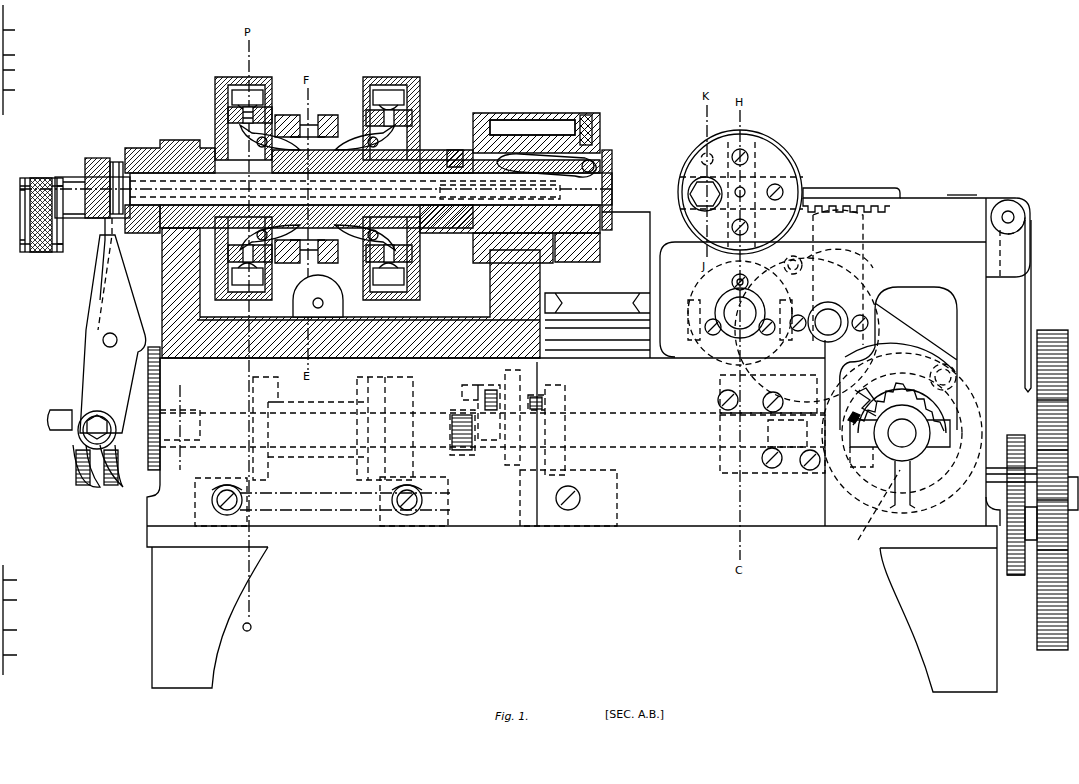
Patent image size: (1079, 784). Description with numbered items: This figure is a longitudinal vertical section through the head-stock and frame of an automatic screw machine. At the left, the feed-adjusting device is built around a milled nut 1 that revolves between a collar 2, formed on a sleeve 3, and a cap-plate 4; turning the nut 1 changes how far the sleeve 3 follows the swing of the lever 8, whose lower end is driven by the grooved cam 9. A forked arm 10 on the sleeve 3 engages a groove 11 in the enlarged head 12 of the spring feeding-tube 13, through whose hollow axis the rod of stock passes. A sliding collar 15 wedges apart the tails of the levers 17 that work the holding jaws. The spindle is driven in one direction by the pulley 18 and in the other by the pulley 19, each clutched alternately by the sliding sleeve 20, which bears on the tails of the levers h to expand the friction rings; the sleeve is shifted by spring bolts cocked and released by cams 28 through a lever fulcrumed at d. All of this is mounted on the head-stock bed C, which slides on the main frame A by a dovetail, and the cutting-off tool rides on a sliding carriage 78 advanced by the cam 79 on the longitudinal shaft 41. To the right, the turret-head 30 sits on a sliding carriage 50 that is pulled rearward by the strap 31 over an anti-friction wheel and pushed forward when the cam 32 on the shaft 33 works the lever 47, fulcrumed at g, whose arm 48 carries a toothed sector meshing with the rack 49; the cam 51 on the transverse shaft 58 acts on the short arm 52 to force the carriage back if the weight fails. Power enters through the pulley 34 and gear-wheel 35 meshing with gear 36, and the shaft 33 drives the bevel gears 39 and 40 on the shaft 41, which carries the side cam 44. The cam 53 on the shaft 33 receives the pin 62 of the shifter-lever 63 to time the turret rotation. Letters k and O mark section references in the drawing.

The nut 1 is at (40, 178).
The collar 2 is at (58, 252).
The sleeve 3 is at (78, 180).
The cap-plate 4 is at (20, 250).
The lever 8 is at (104, 352).
The grooved cam 9 is at (98, 477).
The forked arm 10 is at (110, 160).
The groove 11 is at (105, 232).
The enlarged head 12 is at (115, 228).
The spring feeding-tube 13 is at (333, 195).
The sliding collar 15 is at (452, 152).
The levers 17 is at (613, 162).
The pulley 18 is at (391, 178).
The pulley 19 is at (243, 178).
The sliding clutch sleeve 20 is at (335, 115).
The cams 28 is at (230, 405).
The turret-head 30 is at (740, 192).
The strap 31 is at (1008, 287).
The cam 32 is at (870, 511).
The shaft 33 is at (900, 456).
The pulley 34 is at (1057, 482).
The gear-wheel 35 is at (1011, 497).
The gear 36 is at (1014, 584).
The beveled gear 39 is at (897, 402).
The beveled gear 40 is at (862, 458).
The longitudinal shaft 41 is at (620, 426).
The side cam 44 is at (560, 400).
The lever 47 is at (898, 358).
The arm 48 is at (840, 277).
The rack 49 is at (890, 198).
The sliding carriage 50 is at (961, 209).
The cam 51 is at (772, 288).
The short arm 52 is at (804, 265).
The cam 53 is at (950, 495).
The transverse shaft 58 is at (740, 313).
The pin 62 is at (851, 456).
The lever 63 is at (714, 354).
The sliding carriage 78 is at (597, 285).
The cam 79 is at (512, 388).
The main bed A is at (572, 445).
The bed C is at (351, 293).
The fulcrum d is at (318, 308).
The fulcrum shaft g is at (829, 322).
The levers h is at (270, 187).
The lever k is at (365, 187).
The point O is at (245, 633).